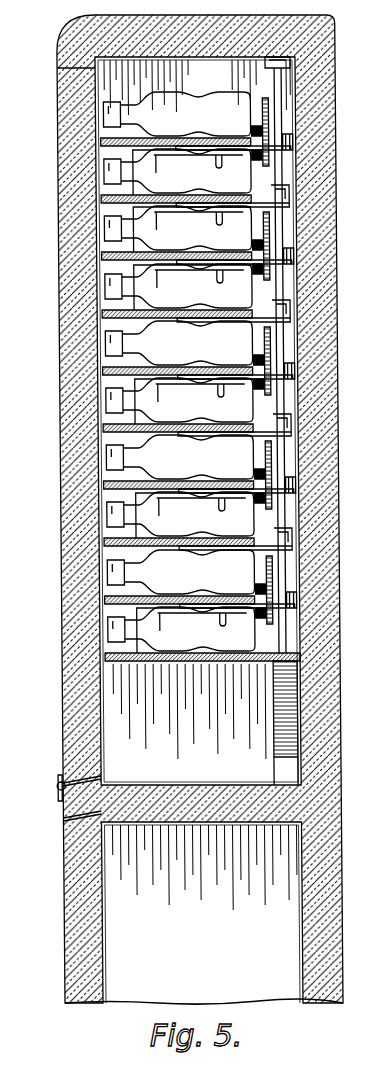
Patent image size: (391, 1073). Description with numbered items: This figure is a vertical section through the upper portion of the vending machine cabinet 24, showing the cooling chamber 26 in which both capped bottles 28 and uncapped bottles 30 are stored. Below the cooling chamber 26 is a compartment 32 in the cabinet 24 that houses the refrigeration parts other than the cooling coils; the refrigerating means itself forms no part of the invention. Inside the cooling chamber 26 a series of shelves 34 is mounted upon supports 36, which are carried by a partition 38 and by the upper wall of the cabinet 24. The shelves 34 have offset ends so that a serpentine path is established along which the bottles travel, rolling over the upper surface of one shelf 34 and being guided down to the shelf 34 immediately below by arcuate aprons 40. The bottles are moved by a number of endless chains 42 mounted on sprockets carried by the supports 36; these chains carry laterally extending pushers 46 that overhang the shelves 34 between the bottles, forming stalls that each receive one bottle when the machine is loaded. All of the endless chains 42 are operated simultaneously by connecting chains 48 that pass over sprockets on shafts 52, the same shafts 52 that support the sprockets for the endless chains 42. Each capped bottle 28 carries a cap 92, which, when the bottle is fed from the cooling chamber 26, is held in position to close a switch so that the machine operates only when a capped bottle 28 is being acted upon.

The cabinet 24 is at (215, 509).
The cooling chamber 26 is at (197, 87).
The capped bottle 28 is at (178, 343).
The uncapped bottle 30 is at (176, 114).
The compartment 32 is at (205, 868).
The shelves 34 is at (176, 424).
The supports 36 is at (283, 114).
The partition 38 is at (198, 661).
The arcuate aprons 40 is at (141, 661).
The endless chains 42 is at (234, 414).
The pushers 46 is at (193, 287).
The connecting chains 48 is at (268, 228).
The shafts 52 is at (290, 364).
The cap 92 is at (103, 628).